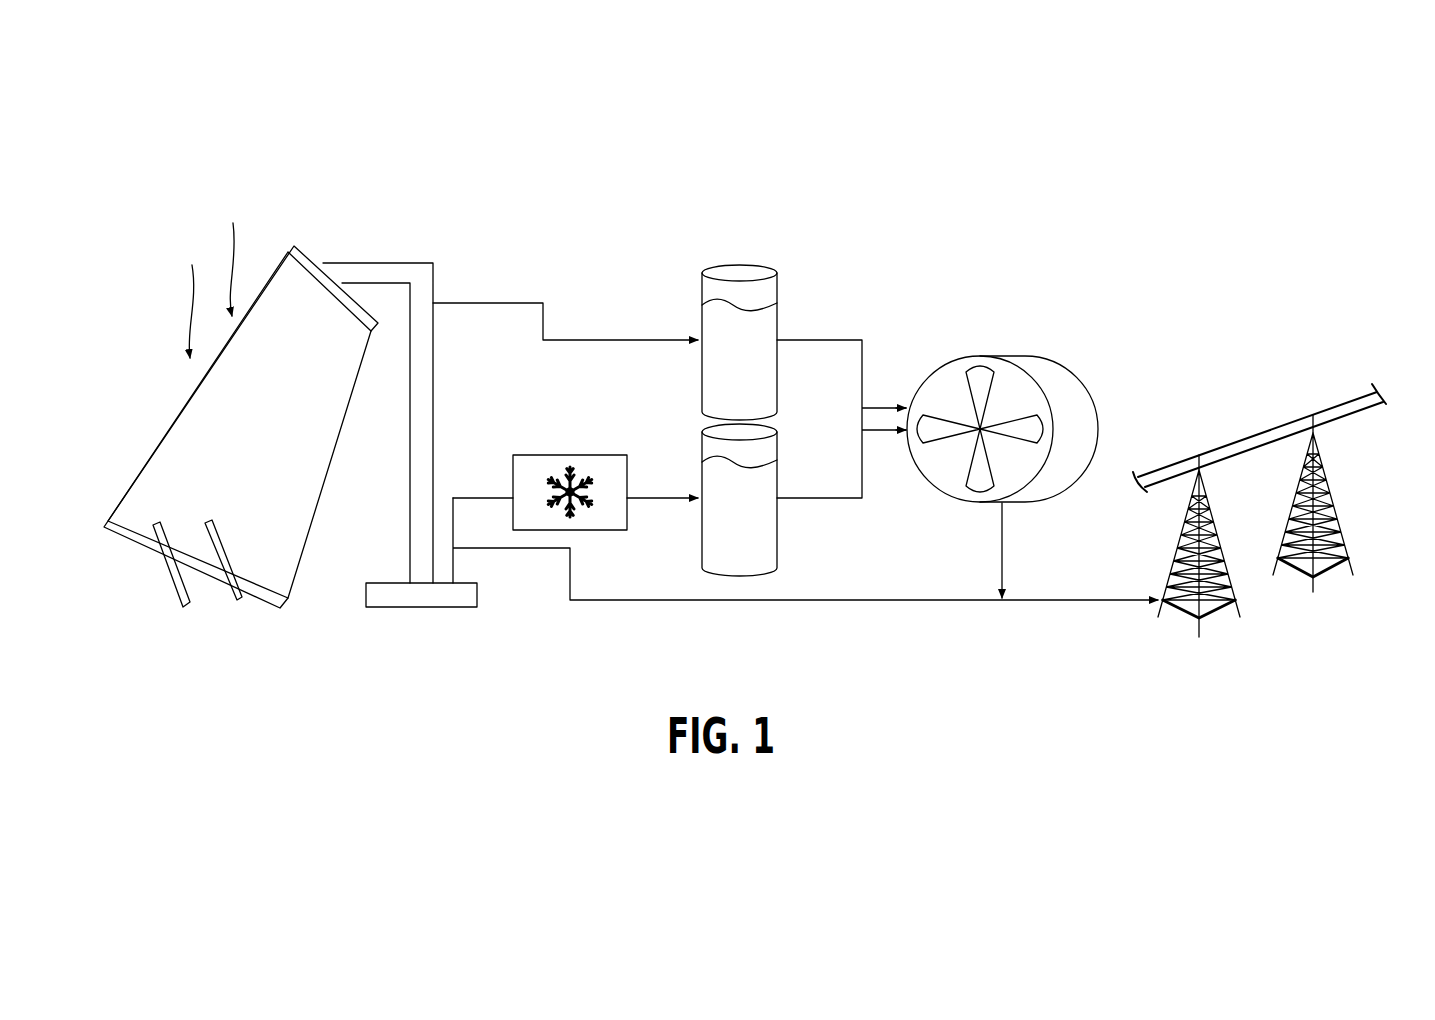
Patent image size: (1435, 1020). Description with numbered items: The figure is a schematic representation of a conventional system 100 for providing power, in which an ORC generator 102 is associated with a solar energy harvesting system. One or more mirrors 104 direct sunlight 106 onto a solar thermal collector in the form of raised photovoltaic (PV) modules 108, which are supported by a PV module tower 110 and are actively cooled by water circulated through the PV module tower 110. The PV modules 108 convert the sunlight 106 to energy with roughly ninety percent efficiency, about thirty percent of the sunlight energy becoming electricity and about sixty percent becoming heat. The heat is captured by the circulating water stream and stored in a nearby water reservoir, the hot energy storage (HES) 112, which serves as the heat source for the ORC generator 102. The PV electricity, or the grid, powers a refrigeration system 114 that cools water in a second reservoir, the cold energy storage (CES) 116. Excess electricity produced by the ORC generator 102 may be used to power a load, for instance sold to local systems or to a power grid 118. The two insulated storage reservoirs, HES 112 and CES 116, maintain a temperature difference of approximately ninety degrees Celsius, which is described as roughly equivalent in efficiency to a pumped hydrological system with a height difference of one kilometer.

The system 100 is at (1344, 144).
The ORC generator 102 is at (997, 353).
The mirrors 104 is at (233, 603).
The sunlight 106 is at (190, 312).
The photovoltaic (PV) modules 108 is at (294, 244).
The PV module tower 110 is at (433, 410).
The hot energy storage (HES) 112 is at (778, 373).
The refrigeration system 114 is at (567, 455).
The cold energy storage (CES) 116 is at (778, 533).
The power grid 118 is at (1337, 510).